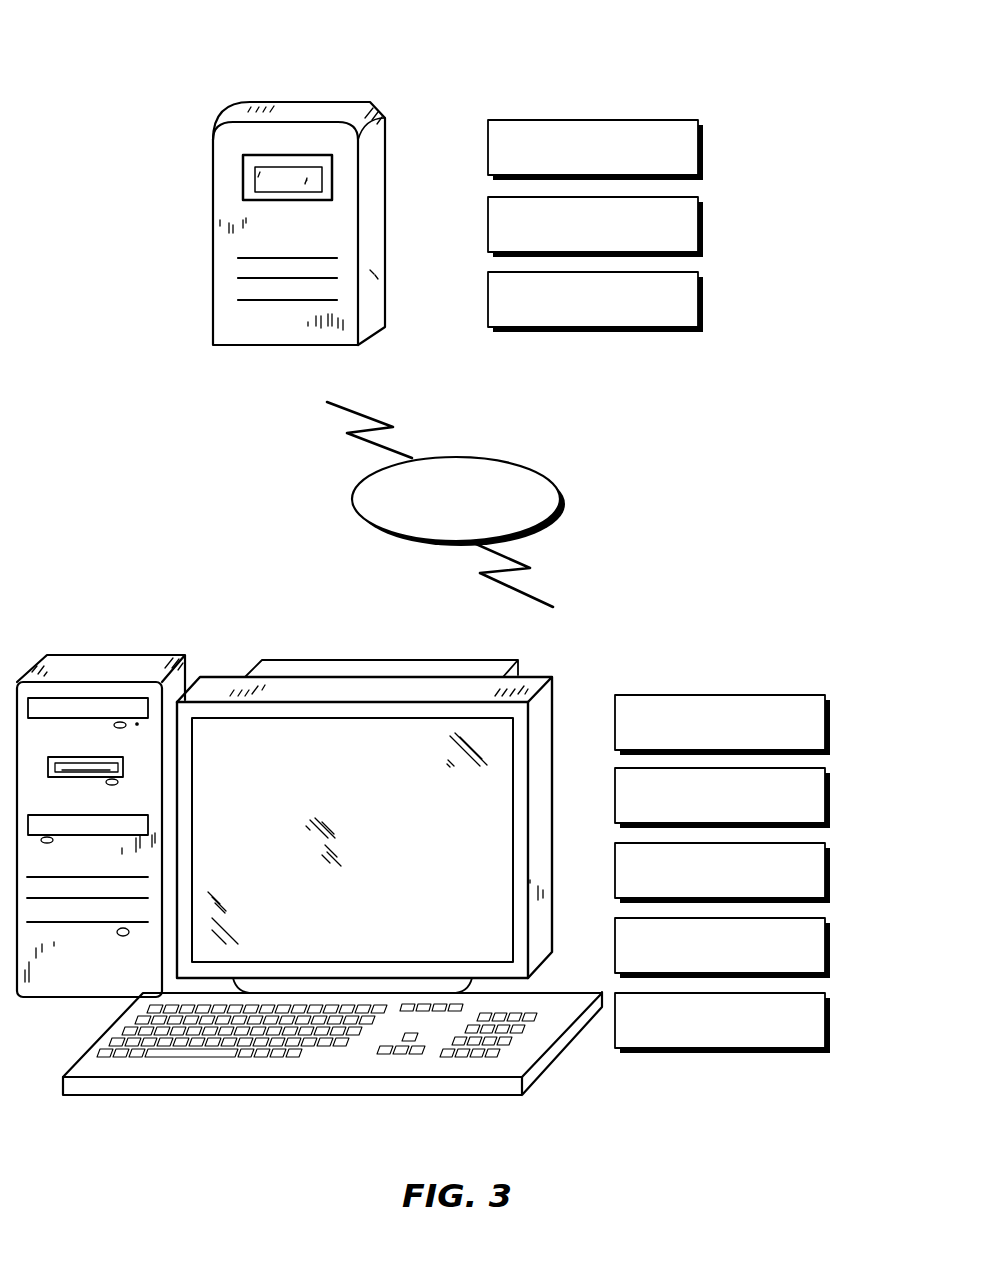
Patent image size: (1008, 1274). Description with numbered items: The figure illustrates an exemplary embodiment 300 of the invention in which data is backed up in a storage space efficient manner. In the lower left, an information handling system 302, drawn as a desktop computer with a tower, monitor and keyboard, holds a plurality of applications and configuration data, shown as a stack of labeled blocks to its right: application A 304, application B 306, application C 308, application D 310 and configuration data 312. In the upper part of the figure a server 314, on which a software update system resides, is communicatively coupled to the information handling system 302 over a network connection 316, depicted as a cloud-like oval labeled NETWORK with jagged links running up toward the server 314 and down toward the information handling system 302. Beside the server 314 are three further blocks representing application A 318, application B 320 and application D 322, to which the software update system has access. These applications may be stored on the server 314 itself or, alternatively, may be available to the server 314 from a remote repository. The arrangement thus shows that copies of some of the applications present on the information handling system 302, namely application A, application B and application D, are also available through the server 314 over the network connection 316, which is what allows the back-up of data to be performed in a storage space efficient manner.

The exemplary embodiment 300 is at (103, 88).
The information handling system 302 is at (163, 653).
The application A 304 is at (825, 693).
The application B 306 is at (825, 766).
The application C 308 is at (825, 841).
The application D 310 is at (825, 916).
The configuration data 312 is at (825, 991).
The server 314 is at (343, 97).
The network connection 316 is at (531, 465).
The application A 318 is at (698, 118).
The application B 320 is at (698, 195).
The application D 322 is at (698, 270).